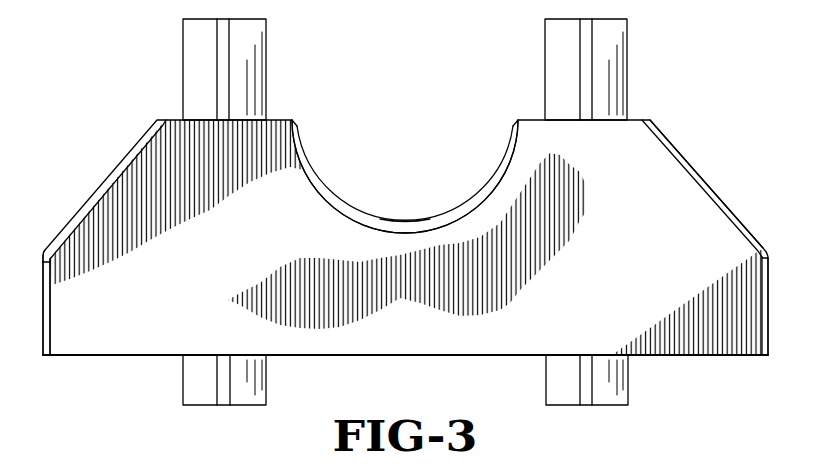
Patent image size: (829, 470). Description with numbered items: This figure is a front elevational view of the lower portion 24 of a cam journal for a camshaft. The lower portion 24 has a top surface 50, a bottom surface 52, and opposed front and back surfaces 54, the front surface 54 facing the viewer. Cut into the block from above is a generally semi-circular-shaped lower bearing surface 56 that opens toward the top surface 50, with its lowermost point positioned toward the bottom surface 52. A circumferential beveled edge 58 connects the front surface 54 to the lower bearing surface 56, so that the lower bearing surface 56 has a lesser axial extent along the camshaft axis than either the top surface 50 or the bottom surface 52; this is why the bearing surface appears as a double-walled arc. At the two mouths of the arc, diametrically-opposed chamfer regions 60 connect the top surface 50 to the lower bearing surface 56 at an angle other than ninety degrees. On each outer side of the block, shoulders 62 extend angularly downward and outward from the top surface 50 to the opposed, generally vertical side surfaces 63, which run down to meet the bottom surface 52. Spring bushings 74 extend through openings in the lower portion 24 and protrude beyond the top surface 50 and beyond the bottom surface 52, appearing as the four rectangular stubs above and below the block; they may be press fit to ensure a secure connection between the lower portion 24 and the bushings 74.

The lower portion 24 is at (166, 181).
The top surface 50 is at (277, 118).
The bottom surface 52 is at (652, 356).
The front and back surfaces 54 is at (113, 330).
The lower bearing surface 56 is at (321, 177).
The circumferential beveled edge 58 is at (423, 227).
The chamfer regions 60 is at (298, 130).
The shoulders 62 is at (695, 163).
The side surfaces 63 is at (43, 308).
The spring bushings 74 is at (255, 379).